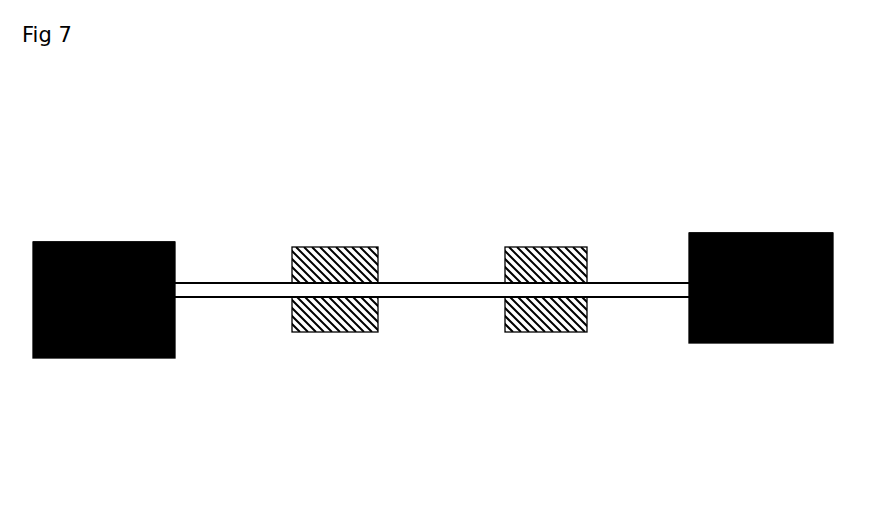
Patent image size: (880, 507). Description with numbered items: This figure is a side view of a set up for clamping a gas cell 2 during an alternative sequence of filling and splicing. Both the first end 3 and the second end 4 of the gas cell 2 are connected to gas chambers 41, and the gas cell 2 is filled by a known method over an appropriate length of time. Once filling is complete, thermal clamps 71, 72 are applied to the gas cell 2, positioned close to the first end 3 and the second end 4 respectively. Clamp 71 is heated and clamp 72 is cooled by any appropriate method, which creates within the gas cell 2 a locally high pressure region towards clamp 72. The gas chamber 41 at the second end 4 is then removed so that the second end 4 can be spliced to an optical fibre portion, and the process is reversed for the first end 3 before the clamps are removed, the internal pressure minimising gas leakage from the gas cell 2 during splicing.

The gas cell 2 is at (436, 297).
The first end 3 is at (175, 368).
The second end 4 is at (691, 355).
The gas chamber 41 is at (100, 242).
The thermal clamp 71 is at (329, 332).
The thermal clamp 72 is at (553, 332).